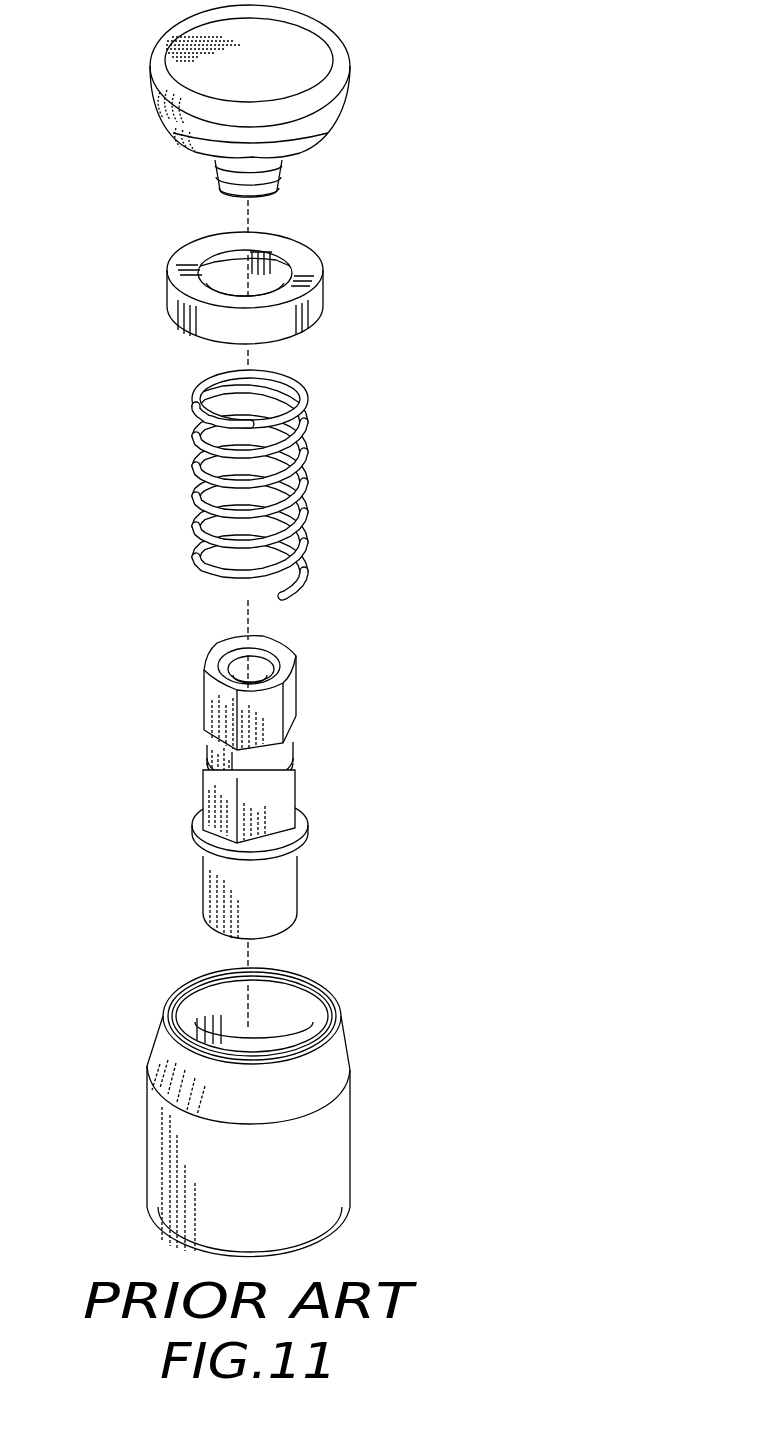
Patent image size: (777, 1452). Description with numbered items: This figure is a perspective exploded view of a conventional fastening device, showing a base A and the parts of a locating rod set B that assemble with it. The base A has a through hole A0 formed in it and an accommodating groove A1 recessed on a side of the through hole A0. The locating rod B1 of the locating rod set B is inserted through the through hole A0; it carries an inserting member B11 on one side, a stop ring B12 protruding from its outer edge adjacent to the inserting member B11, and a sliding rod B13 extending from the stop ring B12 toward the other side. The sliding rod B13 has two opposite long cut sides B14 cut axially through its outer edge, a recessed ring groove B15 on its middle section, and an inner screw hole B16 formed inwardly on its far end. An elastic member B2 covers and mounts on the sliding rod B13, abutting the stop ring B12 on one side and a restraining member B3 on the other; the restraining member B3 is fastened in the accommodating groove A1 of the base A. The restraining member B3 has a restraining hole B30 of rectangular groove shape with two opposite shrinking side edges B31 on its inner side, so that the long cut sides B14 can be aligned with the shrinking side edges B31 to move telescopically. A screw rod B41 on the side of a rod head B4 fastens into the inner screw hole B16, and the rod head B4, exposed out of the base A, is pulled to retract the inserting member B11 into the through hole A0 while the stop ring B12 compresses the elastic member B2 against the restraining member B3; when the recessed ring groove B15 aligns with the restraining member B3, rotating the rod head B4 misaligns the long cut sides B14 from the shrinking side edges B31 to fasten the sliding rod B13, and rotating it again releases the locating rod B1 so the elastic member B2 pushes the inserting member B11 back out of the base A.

The base A is at (256, 1110).
The through hole A0 is at (276, 1026).
The accommodating groove A1 is at (198, 1018).
The locating rod set B is at (78, 40).
The locating rod B1 is at (253, 782).
The inserting member B11 is at (208, 876).
The stop ring B12 is at (298, 832).
The sliding rod B13 is at (250, 687).
The long cut sides B14 is at (283, 651).
The recessed ring groove B15 is at (212, 757).
The inner screw hole B16 is at (240, 668).
The elastic member B2 is at (305, 484).
The restraining member B3 is at (251, 281).
The restraining hole B30 is at (232, 276).
The shrinking side edges B31 is at (278, 270).
The rod head B4 is at (276, 101).
The screw rod B41 is at (216, 175).